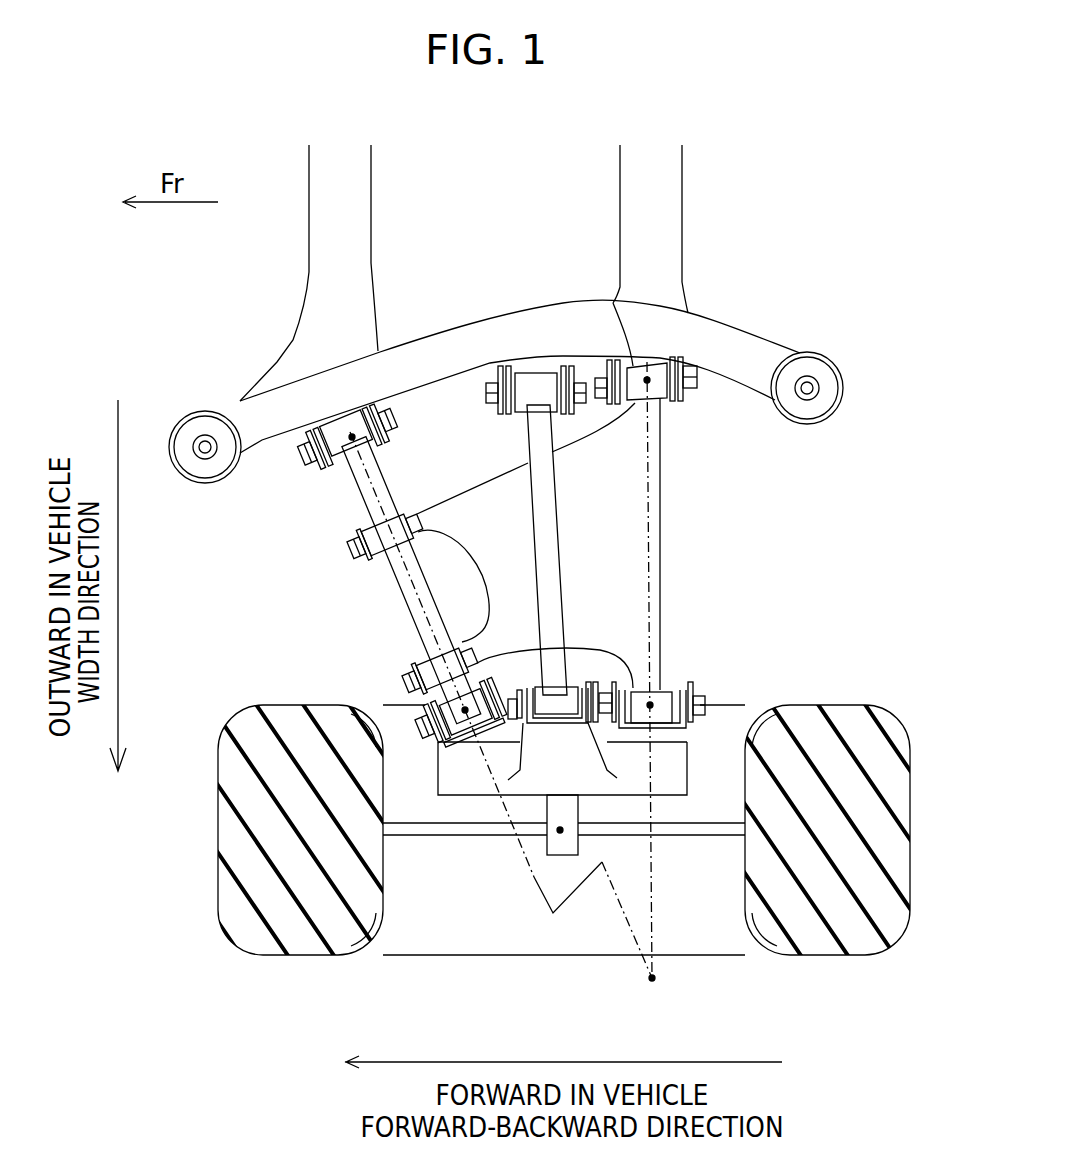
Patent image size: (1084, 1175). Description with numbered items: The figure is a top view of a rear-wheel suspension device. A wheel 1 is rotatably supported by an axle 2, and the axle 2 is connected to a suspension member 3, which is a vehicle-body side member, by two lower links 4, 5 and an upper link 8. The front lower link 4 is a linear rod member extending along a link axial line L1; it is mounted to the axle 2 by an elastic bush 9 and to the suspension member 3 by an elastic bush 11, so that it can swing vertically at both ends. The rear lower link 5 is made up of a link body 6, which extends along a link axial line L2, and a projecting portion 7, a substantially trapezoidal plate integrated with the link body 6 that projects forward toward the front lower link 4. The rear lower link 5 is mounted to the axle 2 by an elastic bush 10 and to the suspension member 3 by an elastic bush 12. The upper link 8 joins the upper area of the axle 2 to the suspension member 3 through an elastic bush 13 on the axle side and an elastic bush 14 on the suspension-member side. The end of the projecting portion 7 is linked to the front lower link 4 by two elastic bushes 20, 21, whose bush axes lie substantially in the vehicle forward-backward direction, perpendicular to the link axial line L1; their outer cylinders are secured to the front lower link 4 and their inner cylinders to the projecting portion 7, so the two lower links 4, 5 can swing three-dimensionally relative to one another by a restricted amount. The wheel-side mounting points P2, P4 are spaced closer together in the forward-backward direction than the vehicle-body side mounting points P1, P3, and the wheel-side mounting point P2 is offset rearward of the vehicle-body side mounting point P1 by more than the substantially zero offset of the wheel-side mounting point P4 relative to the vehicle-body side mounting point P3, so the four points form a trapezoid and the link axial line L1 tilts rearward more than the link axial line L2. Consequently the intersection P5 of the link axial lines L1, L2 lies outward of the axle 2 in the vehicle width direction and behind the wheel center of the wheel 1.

The wheel 1 is at (888, 866).
The axle 2 is at (463, 775).
The suspension member 3 is at (409, 356).
The front lower link 4 is at (432, 654).
The rear lower link 5 is at (694, 670).
The link body 6 is at (694, 670).
The projecting portion 7 is at (615, 483).
The upper link 8 is at (542, 522).
The elastic bush 9 is at (445, 702).
The elastic bush 10 is at (661, 701).
The elastic bush 11 is at (346, 463).
The elastic bush 12 is at (636, 372).
The elastic bush 13 is at (553, 707).
The elastic bush 14 is at (535, 388).
The elastic bush 20 is at (425, 650).
The elastic bush 21 is at (368, 519).
The vehicle-body side mounting point P1 is at (355, 438).
The wheel-side mounting point P2 is at (440, 733).
The vehicle-body side mounting point P3 is at (650, 383).
The wheel-side mounting point P4 is at (653, 707).
The intersection P5 is at (672, 980).
The link axial line L1 is at (406, 601).
The link axial line L2 is at (652, 572).